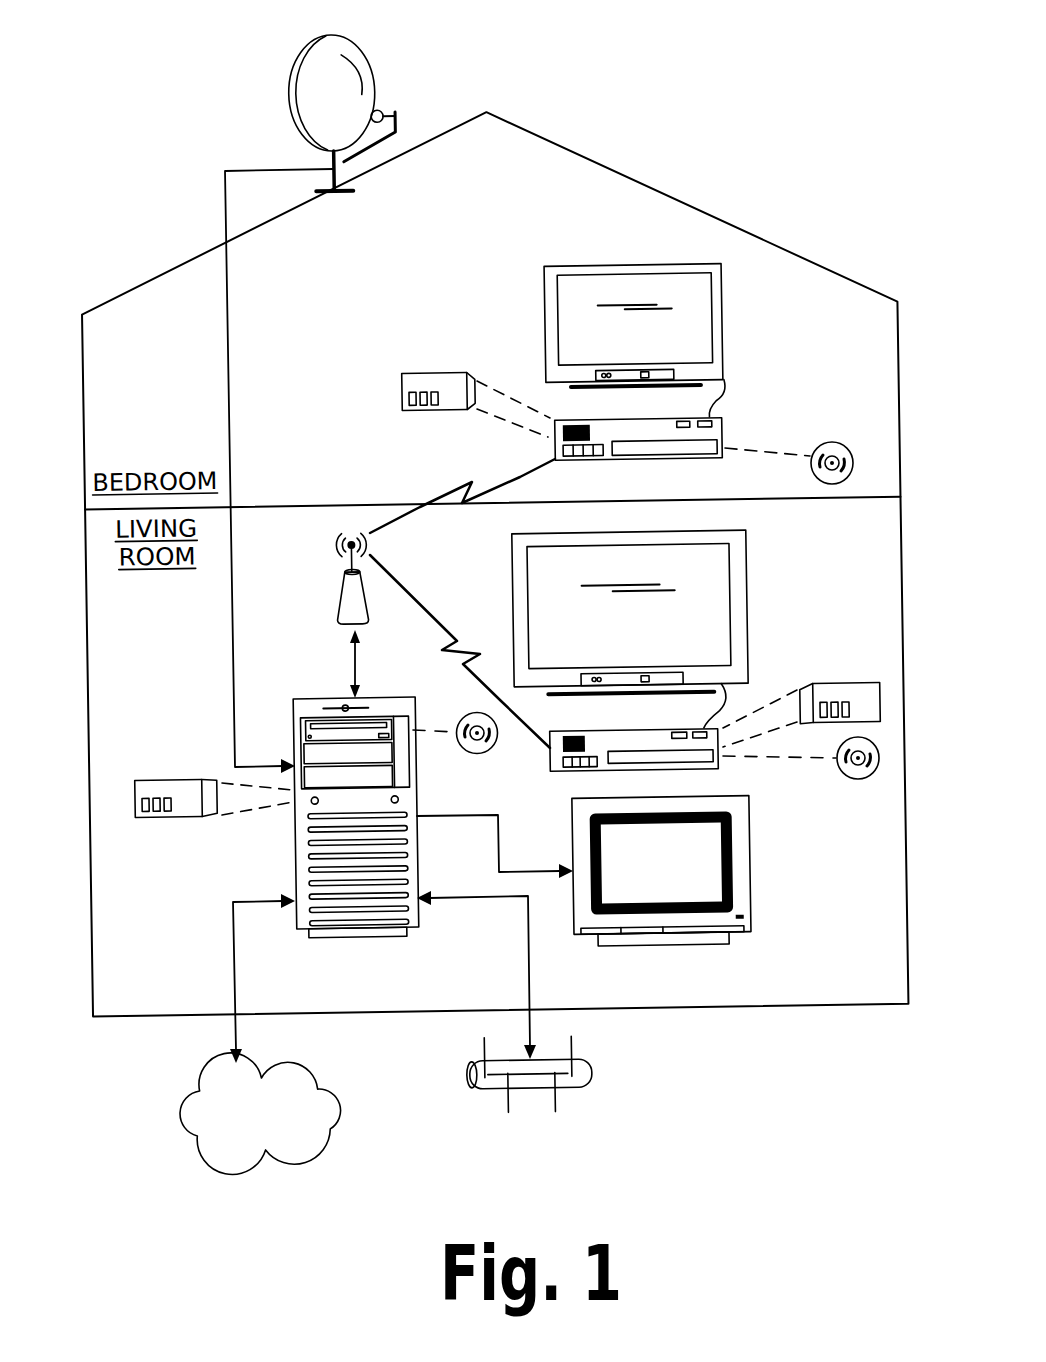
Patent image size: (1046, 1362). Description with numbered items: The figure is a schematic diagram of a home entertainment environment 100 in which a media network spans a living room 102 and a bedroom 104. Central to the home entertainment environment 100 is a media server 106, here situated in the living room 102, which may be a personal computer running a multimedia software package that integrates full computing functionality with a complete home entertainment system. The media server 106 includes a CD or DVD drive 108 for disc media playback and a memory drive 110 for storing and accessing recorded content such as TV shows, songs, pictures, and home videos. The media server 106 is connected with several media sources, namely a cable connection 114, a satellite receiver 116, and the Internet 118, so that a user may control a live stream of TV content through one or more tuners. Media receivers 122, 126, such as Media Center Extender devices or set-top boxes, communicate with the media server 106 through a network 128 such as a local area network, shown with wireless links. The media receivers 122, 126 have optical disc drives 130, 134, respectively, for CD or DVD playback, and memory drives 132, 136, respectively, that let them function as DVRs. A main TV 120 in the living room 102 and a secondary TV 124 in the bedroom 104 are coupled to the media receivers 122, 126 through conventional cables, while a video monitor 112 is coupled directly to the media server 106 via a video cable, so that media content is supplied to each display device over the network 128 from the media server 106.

The home entertainment environment 100 is at (716, 120).
The living room 102 is at (822, 1005).
The bedroom 104 is at (213, 248).
The media server 106 is at (318, 698).
The CD or DVD drive 108 is at (492, 749).
The memory drive 110 is at (170, 779).
The video monitor 112 is at (750, 868).
The cable connection 114 is at (594, 1074).
The satellite receiver 116 is at (315, 60).
The Internet 118 is at (176, 1115).
The main TV 120 is at (748, 612).
The media receiver 122 is at (587, 772).
The secondary TV 124 is at (620, 264).
The media receiver 126 is at (723, 437).
The network 128 is at (338, 605).
The optical disc drive 130 is at (858, 780).
The memory drive 132 is at (860, 683).
The optical disc drive 134 is at (854, 444).
The memory drive 136 is at (400, 390).